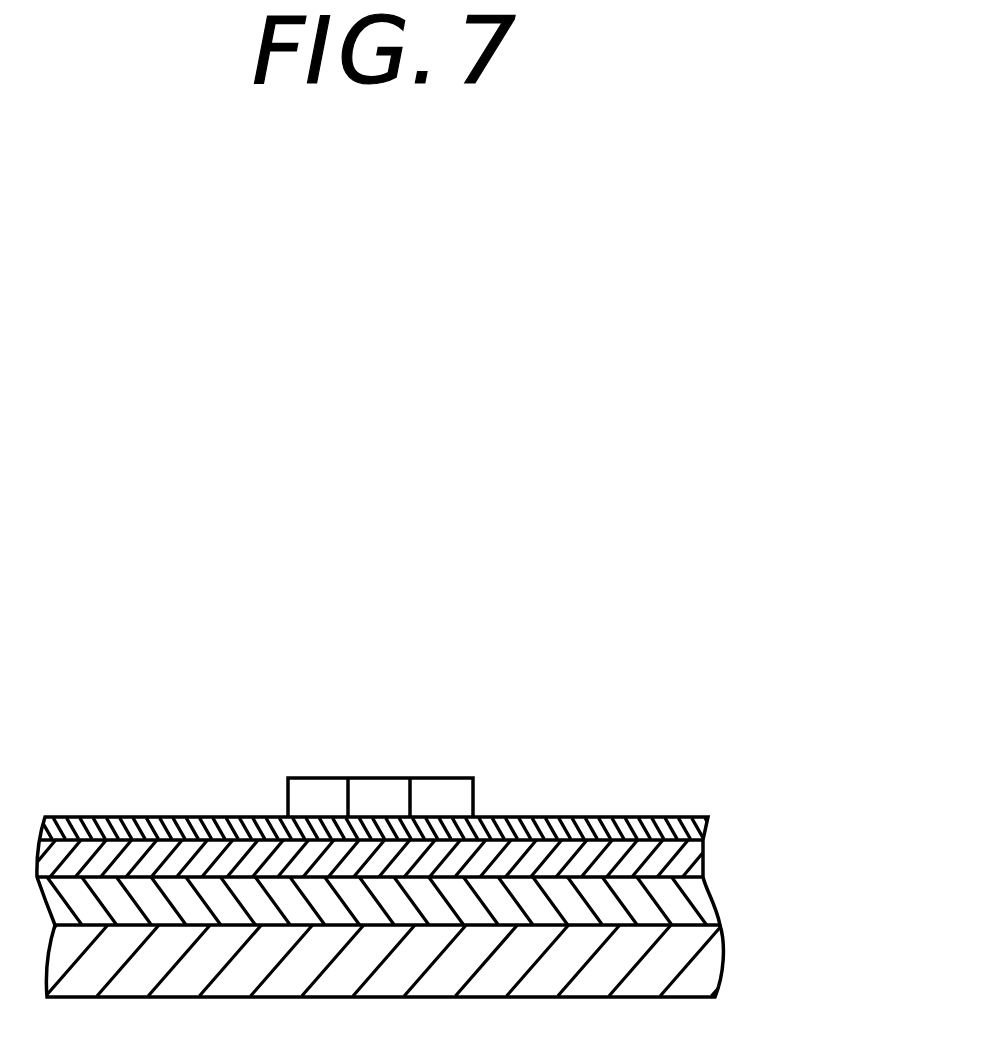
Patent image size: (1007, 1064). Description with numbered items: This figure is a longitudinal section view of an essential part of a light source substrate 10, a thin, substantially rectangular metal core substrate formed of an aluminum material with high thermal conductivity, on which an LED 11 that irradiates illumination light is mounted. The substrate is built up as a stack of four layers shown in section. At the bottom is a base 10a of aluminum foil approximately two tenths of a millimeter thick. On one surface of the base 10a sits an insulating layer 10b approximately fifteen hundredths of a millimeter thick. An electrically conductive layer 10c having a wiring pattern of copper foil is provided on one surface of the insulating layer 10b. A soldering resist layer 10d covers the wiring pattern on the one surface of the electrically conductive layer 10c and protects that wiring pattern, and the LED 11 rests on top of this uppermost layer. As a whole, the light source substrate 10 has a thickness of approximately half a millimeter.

The light source substrate 10 is at (595, 521).
The base 10a is at (698, 962).
The insulating layer 10b is at (677, 889).
The electrically conductive layer 10c is at (695, 850).
The soldering resist layer 10d is at (678, 813).
The LED 11 is at (380, 797).